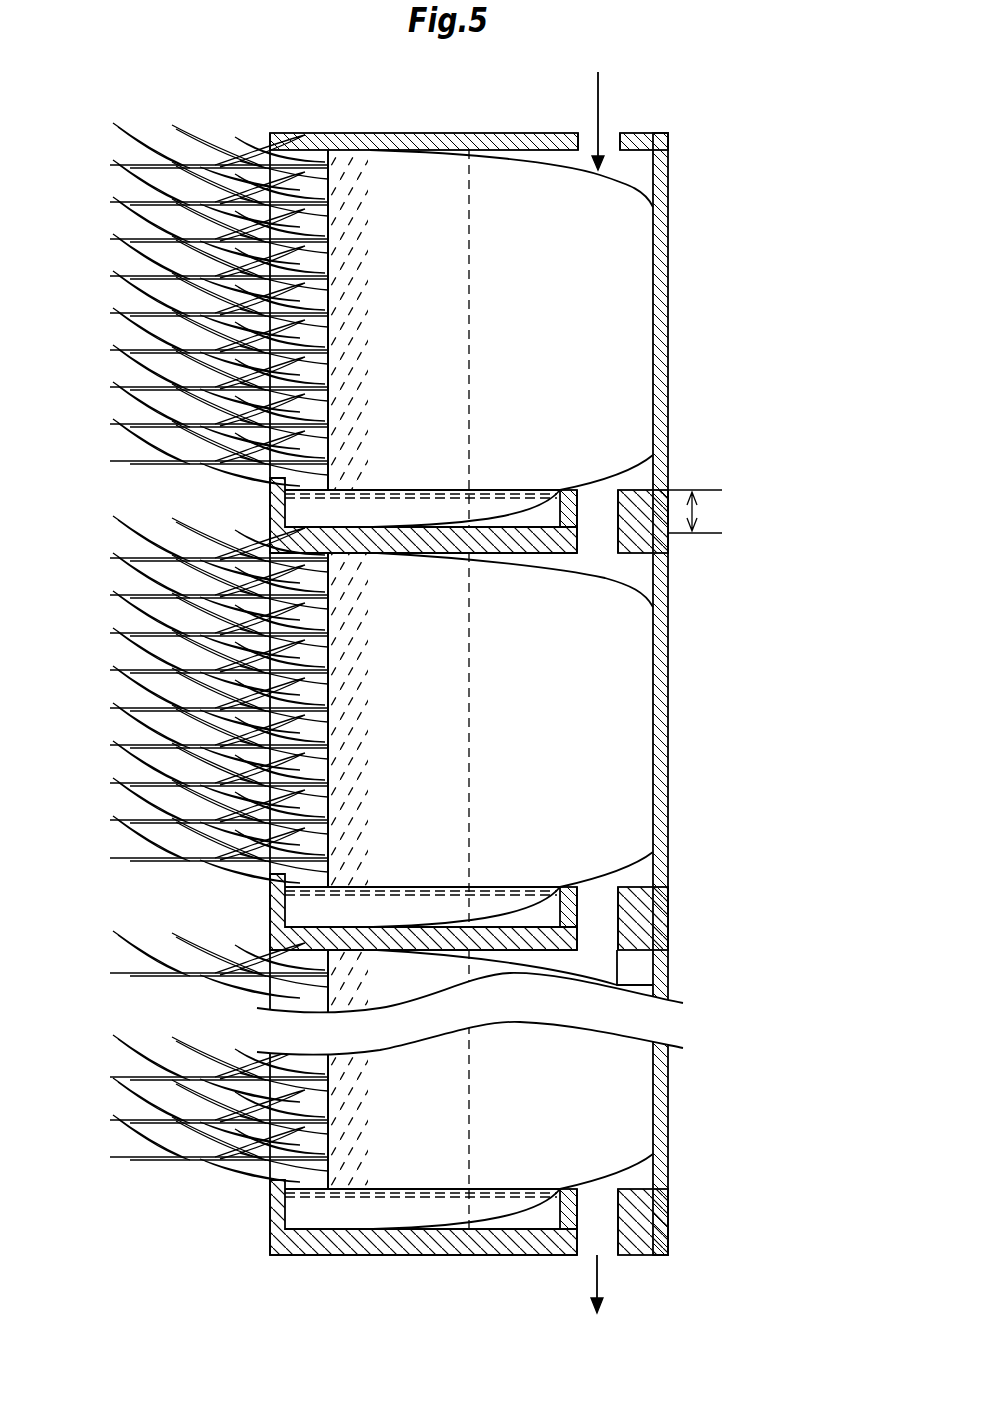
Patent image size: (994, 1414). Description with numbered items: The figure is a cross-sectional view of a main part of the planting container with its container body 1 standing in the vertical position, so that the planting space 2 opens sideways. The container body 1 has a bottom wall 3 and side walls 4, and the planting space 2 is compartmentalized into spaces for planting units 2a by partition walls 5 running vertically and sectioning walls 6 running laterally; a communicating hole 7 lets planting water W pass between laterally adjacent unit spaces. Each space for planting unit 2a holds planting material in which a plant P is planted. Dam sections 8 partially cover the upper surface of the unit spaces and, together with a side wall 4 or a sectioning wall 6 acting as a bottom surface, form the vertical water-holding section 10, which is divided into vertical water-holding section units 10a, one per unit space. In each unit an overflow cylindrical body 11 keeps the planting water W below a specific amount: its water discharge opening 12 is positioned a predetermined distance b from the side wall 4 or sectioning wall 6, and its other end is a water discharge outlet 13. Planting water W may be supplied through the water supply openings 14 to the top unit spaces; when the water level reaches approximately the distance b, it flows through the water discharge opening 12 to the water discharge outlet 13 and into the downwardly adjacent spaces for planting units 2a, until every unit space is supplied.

The container body 1 is at (717, 137).
The space for planting unit 2a is at (396, 669).
The planting space 2 is at (360, 288).
The bottom wall 3 is at (668, 290).
The side wall 4 is at (395, 133).
The partition wall 5 is at (437, 210).
The sectioning wall 6 is at (503, 555).
The communicating hole 7 is at (652, 177).
The dam section 8 is at (270, 515).
The vertical water-holding section unit 10a is at (422, 781).
The vertical water-holding section 10 is at (425, 478).
The cylindrical body 11 is at (565, 488).
The water discharge opening 12 is at (603, 488).
The water discharge outlet 13 is at (598, 555).
The water supply opening 14 is at (590, 133).
The planting water W is at (500, 488).
The plant P is at (132, 262).
The predetermined distance b is at (695, 511).